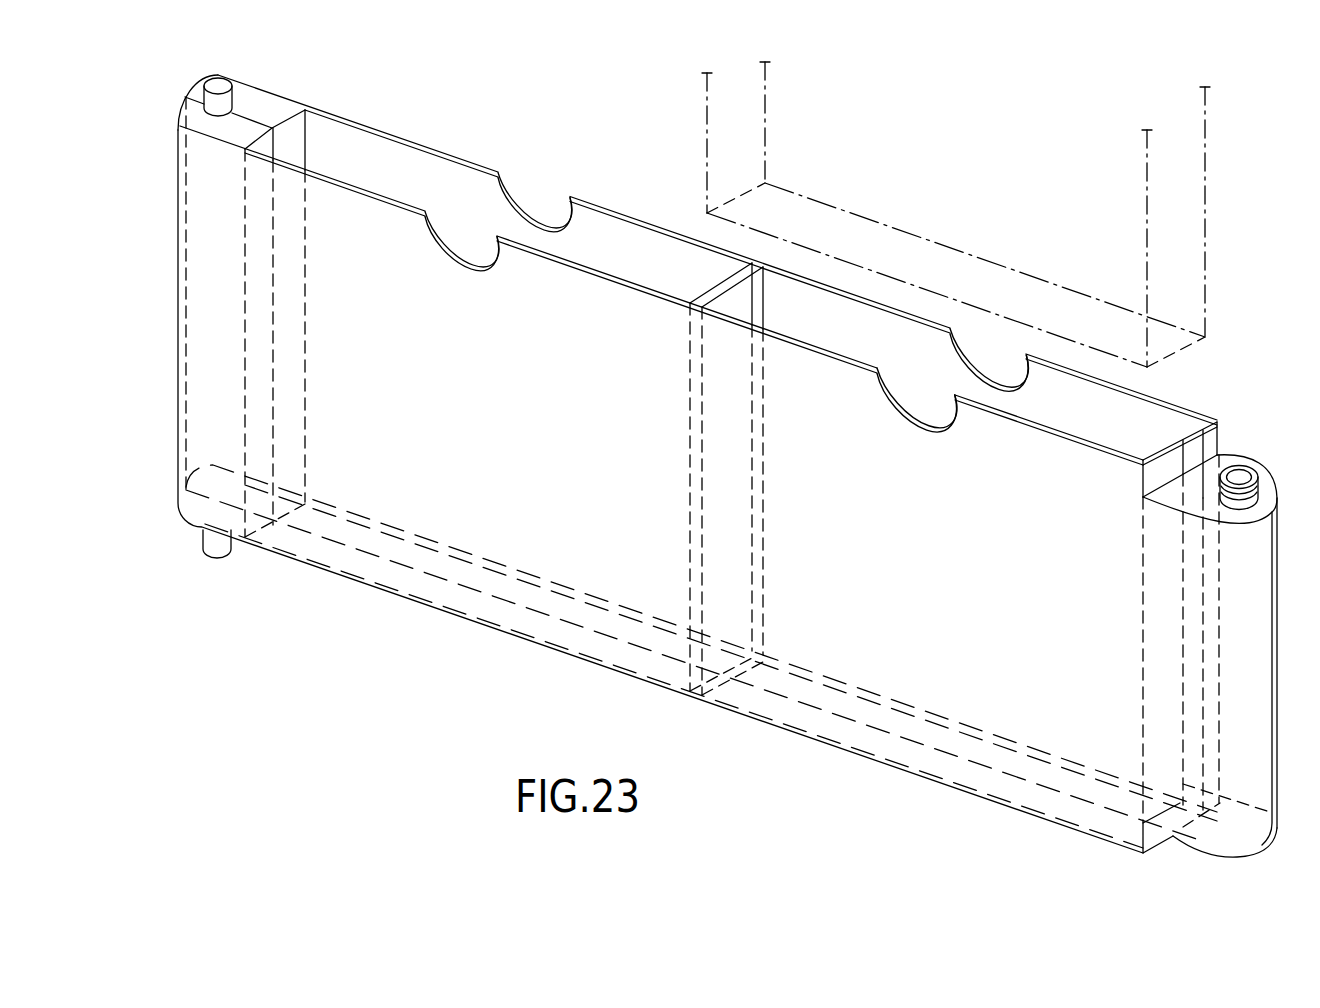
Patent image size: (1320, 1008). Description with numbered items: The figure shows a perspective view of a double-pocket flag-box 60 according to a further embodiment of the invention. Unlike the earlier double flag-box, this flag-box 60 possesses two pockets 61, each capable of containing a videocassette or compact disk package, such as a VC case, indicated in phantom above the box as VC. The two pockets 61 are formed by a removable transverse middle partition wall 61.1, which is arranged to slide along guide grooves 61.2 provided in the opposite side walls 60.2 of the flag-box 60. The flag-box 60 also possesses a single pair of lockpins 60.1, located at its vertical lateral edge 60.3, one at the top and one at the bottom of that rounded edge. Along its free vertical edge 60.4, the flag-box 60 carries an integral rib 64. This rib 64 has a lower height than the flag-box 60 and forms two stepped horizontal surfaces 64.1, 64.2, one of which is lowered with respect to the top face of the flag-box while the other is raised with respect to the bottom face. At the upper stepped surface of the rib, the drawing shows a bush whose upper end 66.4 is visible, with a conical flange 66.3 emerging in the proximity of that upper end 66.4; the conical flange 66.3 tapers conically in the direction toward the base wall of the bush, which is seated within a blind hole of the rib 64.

The flag-box 60 is at (384, 633).
The lockpins 60.1 is at (233, 84).
The side walls 60.2 is at (462, 188).
The vertical lateral edge 60.3 is at (165, 357).
The free vertical edge 60.4 is at (1148, 750).
The pockets 61 is at (389, 172).
The transverse middle partition wall 61.1 is at (692, 300).
The guide grooves 61.2 is at (768, 300).
The rib 64 is at (1262, 695).
The stepped horizontal surface 64.1 is at (1246, 462).
The stepped horizontal surface 64.2 is at (1207, 853).
The conical flange 66.3 is at (1228, 500).
The upper end 66.4 is at (1200, 485).
The VC case VC is at (1202, 250).